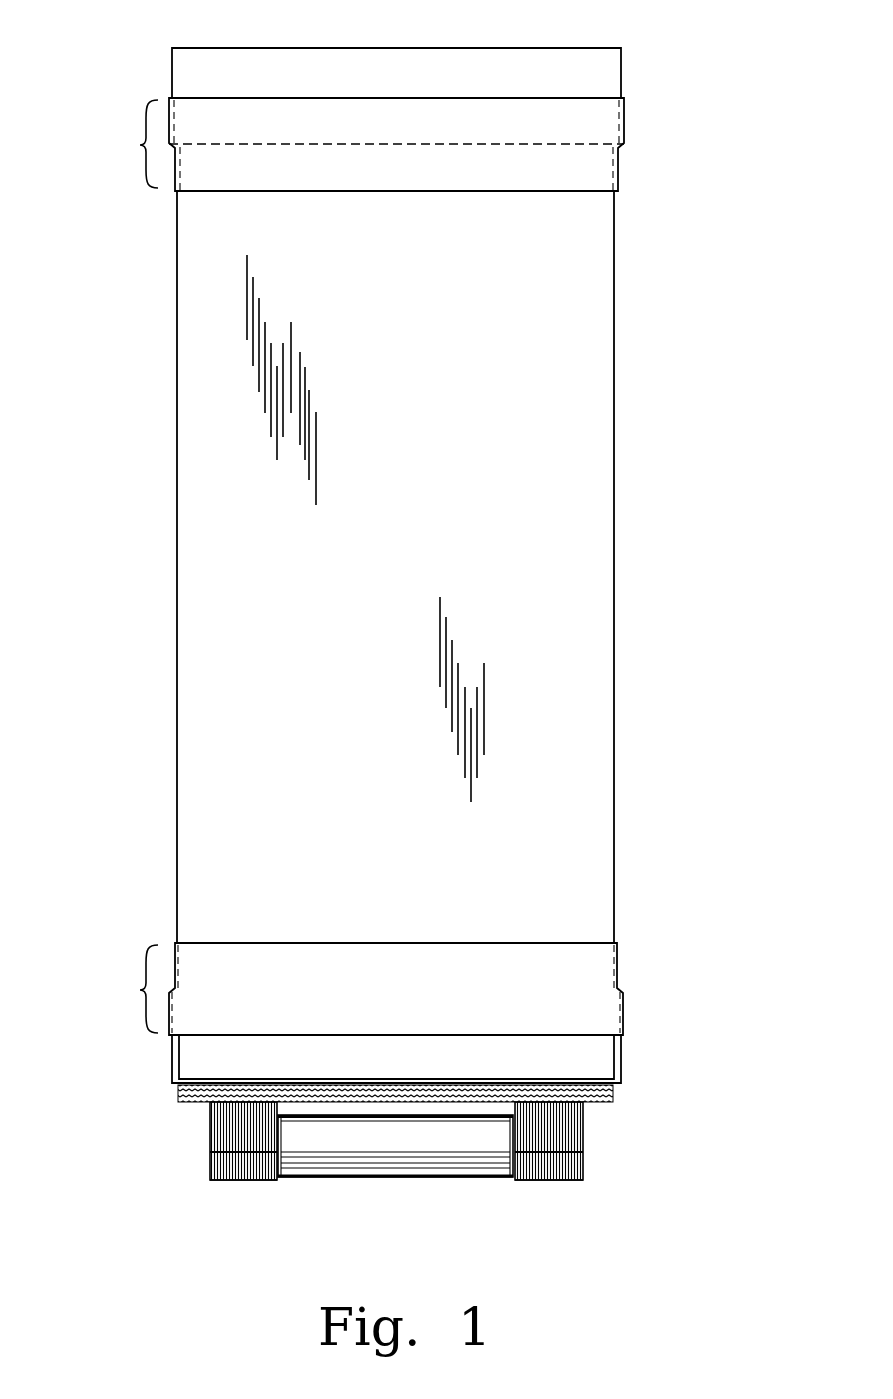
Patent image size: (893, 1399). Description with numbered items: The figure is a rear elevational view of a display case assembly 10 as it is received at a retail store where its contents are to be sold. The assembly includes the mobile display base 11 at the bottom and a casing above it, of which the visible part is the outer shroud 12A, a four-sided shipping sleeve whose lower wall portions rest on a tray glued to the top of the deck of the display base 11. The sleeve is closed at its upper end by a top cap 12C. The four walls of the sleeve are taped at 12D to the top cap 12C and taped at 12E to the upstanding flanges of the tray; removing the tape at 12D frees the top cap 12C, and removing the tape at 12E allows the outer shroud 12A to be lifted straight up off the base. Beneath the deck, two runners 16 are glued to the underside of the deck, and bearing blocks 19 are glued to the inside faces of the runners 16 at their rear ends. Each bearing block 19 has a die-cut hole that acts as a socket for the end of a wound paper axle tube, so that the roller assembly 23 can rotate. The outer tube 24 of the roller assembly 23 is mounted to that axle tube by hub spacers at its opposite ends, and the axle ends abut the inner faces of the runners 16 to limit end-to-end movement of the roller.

The display case assembly 10 is at (427, 543).
The mobile display base 11 is at (350, 1167).
The outer shroud 12A is at (614, 767).
The top cap 12C is at (387, 72).
The tape at top cap 12D is at (353, 144).
The tape at tray flanges 12E is at (353, 989).
The runners 16 is at (210, 1138).
The bearing blocks 19 is at (222, 1181).
The roller assembly 23 is at (402, 1204).
The outer tube 24 is at (416, 1138).